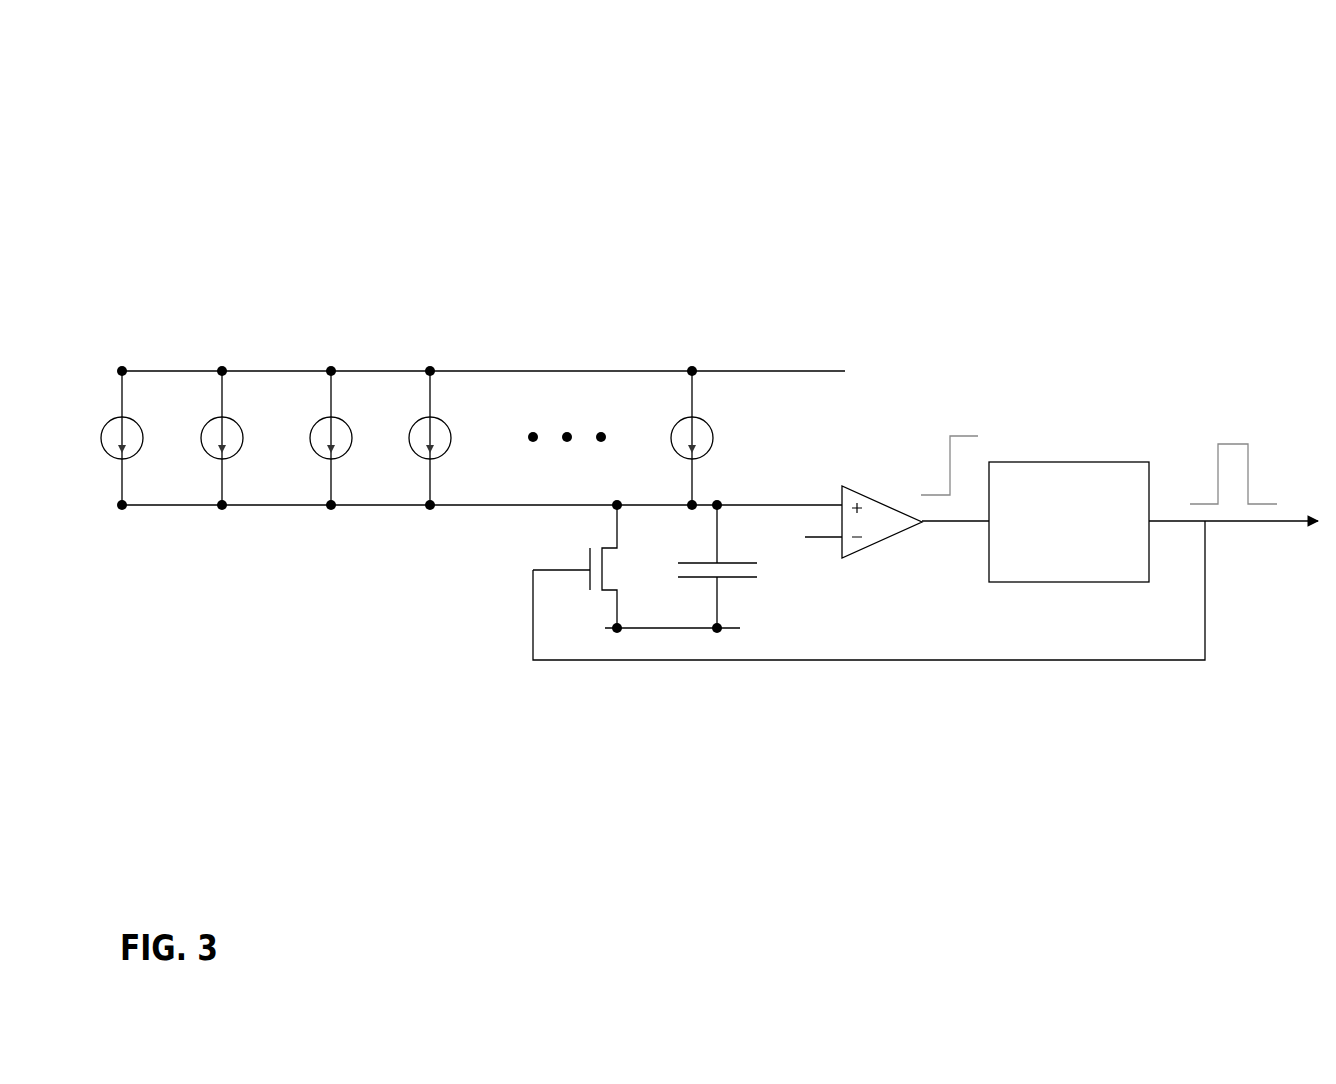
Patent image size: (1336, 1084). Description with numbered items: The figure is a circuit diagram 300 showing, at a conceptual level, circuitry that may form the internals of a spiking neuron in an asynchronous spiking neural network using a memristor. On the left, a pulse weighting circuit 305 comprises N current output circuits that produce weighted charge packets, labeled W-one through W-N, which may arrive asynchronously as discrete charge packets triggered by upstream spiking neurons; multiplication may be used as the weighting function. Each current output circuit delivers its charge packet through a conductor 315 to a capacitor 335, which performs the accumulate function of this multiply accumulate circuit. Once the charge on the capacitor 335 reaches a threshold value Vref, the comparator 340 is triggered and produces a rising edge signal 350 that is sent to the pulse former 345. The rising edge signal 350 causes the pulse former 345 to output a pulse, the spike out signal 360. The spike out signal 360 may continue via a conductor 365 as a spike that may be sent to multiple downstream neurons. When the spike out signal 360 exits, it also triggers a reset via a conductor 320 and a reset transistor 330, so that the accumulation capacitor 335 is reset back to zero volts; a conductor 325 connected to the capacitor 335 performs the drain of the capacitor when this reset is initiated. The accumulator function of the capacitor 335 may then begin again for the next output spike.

The circuit diagram 300 is at (224, 90).
The pulse weighting circuit 305 is at (674, 407).
The conductor 315 is at (175, 505).
The conductor 320 is at (532, 605).
The conductor 325 is at (680, 629).
The reset transistor 330 is at (585, 600).
The capacitor 335 is at (754, 590).
The comparator 340 is at (883, 502).
The pulse former 345 is at (1078, 462).
The rising edge signal 350 is at (959, 418).
The spike out signal 360 is at (1196, 445).
The conductor 365 is at (1273, 523).